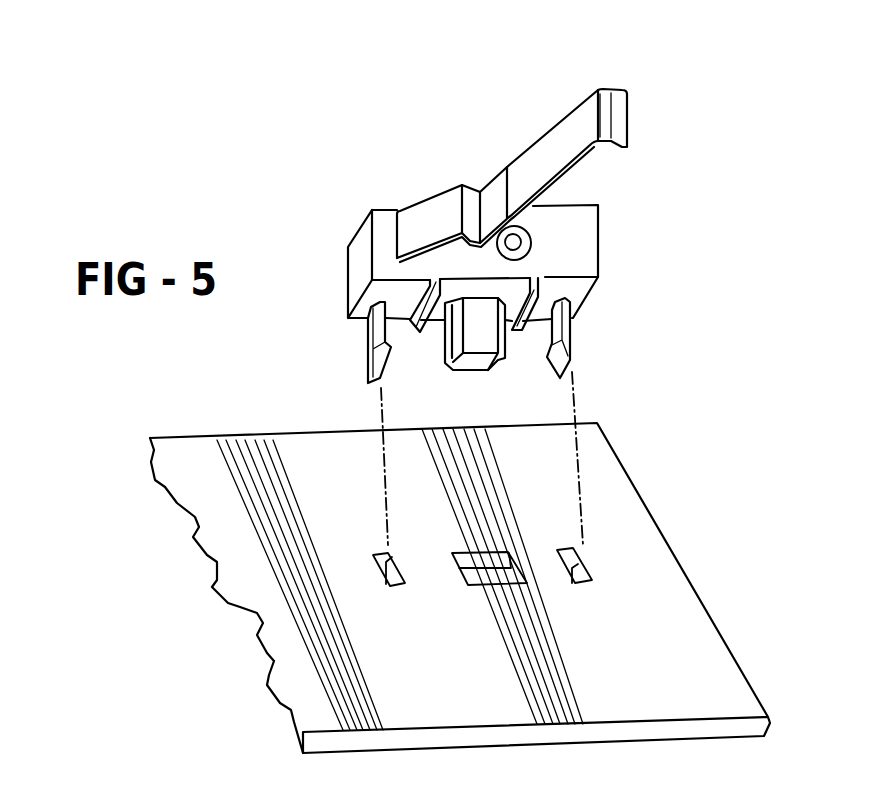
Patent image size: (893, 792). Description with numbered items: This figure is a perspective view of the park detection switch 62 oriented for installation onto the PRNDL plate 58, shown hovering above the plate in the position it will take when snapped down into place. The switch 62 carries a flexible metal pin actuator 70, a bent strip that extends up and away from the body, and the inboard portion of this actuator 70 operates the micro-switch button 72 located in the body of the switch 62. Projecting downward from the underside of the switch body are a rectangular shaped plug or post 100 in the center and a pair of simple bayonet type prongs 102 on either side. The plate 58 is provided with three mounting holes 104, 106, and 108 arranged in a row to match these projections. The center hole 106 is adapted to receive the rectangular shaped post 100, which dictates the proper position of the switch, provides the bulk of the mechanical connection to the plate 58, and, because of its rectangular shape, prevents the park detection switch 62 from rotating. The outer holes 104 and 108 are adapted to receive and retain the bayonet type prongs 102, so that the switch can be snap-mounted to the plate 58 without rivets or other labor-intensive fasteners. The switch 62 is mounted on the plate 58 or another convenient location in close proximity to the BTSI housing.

The PRNDL plate 58 is at (460, 588).
The park detection switch 62 is at (514, 288).
The flexible metal pin actuator 70 is at (577, 130).
The micro-switch button 72 is at (531, 233).
The rectangular shaped post 100 is at (505, 347).
The bayonet type prongs 102 is at (367, 334).
The outer mounting hole 104 is at (405, 576).
The center hole 106 is at (487, 562).
The outer mounting hole 108 is at (590, 568).